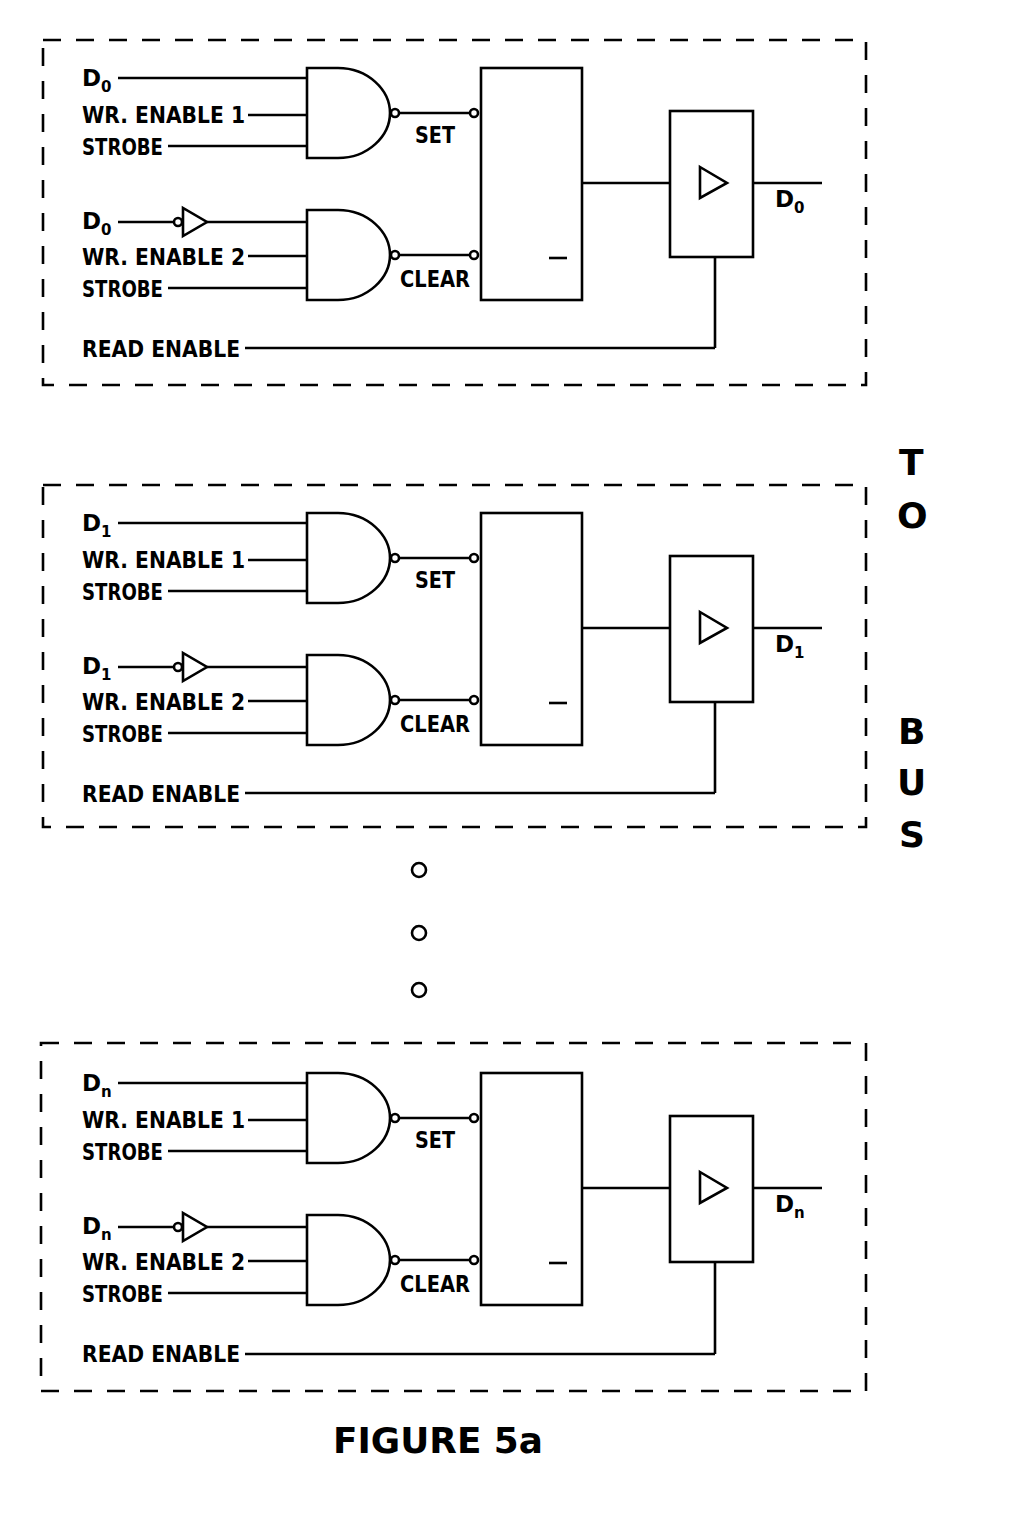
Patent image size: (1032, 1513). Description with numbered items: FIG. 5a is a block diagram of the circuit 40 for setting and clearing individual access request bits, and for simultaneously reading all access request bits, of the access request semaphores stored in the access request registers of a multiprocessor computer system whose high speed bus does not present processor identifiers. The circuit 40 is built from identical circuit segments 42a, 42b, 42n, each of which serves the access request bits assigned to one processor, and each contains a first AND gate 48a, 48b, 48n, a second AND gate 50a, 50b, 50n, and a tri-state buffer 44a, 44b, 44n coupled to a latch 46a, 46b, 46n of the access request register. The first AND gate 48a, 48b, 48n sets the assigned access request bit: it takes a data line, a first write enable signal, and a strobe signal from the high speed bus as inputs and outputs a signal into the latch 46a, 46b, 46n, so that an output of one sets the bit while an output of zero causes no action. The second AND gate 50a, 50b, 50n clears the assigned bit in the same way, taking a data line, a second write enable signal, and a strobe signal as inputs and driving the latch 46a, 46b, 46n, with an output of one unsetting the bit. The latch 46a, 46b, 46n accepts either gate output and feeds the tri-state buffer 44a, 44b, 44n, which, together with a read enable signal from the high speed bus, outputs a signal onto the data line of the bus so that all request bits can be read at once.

The bus interface register circuit 40 is at (95, 948).
The identical circuit segment 42a is at (672, 385).
The identical circuit segment 42b is at (454, 685).
The identical circuit segment 42n is at (453, 1249).
The tri-state buffer 44a is at (732, 111).
The tri-state buffer 44b is at (733, 603).
The tri-state buffer 44n is at (733, 1163).
The latch 46a is at (582, 128).
The latch 46b is at (568, 629).
The latch 46n is at (568, 1189).
The first AND gate 48a is at (340, 68).
The first AND gate 48b is at (359, 528).
The first AND gate 48n is at (359, 1088).
The second AND gate 50a is at (383, 233).
The second AND gate 50b is at (378, 683).
The second AND gate 50n is at (378, 1243).